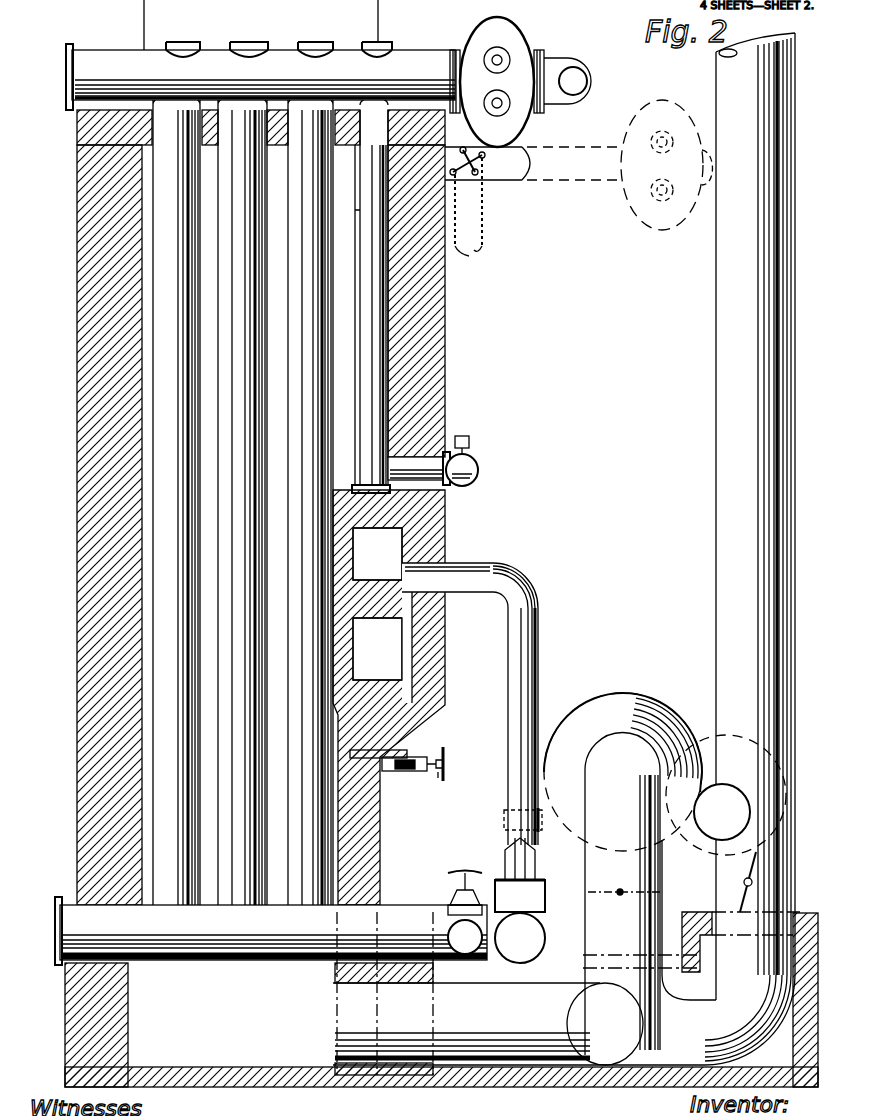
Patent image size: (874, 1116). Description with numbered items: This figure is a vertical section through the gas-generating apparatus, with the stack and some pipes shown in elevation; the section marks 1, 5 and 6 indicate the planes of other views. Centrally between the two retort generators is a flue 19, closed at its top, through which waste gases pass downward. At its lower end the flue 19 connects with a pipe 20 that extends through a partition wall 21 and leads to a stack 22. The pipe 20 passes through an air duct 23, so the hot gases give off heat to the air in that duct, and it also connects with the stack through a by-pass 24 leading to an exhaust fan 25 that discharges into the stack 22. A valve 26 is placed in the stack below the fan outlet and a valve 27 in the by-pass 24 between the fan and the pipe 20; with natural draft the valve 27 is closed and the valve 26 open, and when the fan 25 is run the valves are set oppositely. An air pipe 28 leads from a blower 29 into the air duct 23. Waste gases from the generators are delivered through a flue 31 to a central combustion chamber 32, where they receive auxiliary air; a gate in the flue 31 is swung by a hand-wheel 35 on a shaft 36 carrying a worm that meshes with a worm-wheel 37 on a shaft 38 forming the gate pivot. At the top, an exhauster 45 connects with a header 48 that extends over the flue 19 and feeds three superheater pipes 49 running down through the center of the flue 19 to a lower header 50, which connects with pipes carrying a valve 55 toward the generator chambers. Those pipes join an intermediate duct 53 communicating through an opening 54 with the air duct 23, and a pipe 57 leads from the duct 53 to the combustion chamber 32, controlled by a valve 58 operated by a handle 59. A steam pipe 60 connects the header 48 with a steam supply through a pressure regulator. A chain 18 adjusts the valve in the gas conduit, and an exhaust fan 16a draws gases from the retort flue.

The section line 1- 1 is at (615, 0).
The section line 5- 5 is at (54, 652).
The section line 6- 6 is at (62, 3).
The exhaust fan 16a is at (662, 232).
The chain 18 is at (469, 249).
The flue 19 is at (441, 1025).
The pipe 20 is at (358, 1011).
The partition wall 21 is at (335, 975).
The stack 22 is at (714, 633).
The air duct 23 is at (668, 980).
The by-pass 24 is at (590, 865).
The exhaust fan 25 is at (637, 704).
The valve 26 is at (745, 878).
The valve 27 is at (605, 895).
The air pipe 28 is at (795, 905).
The blower 29 is at (696, 862).
The flue 31 is at (377, 649).
The central combustion chamber 32 is at (377, 554).
The hand-wheel 35 is at (444, 771).
The shaft 36 is at (444, 783).
The worm-wheel 37 is at (396, 772).
The shaft 38 is at (424, 748).
The exhauster 45 is at (520, 82).
The header 48 is at (403, 62).
The superheater pipes 49 is at (162, 340).
The header 50 is at (170, 962).
The intermediate duct 53 is at (540, 958).
The opening 54 is at (505, 963).
The valve 55 is at (465, 882).
The pipe 57 is at (508, 617).
The valve 58 is at (508, 828).
The handle 59 is at (590, 811).
The steam pipe 60 is at (378, 327).